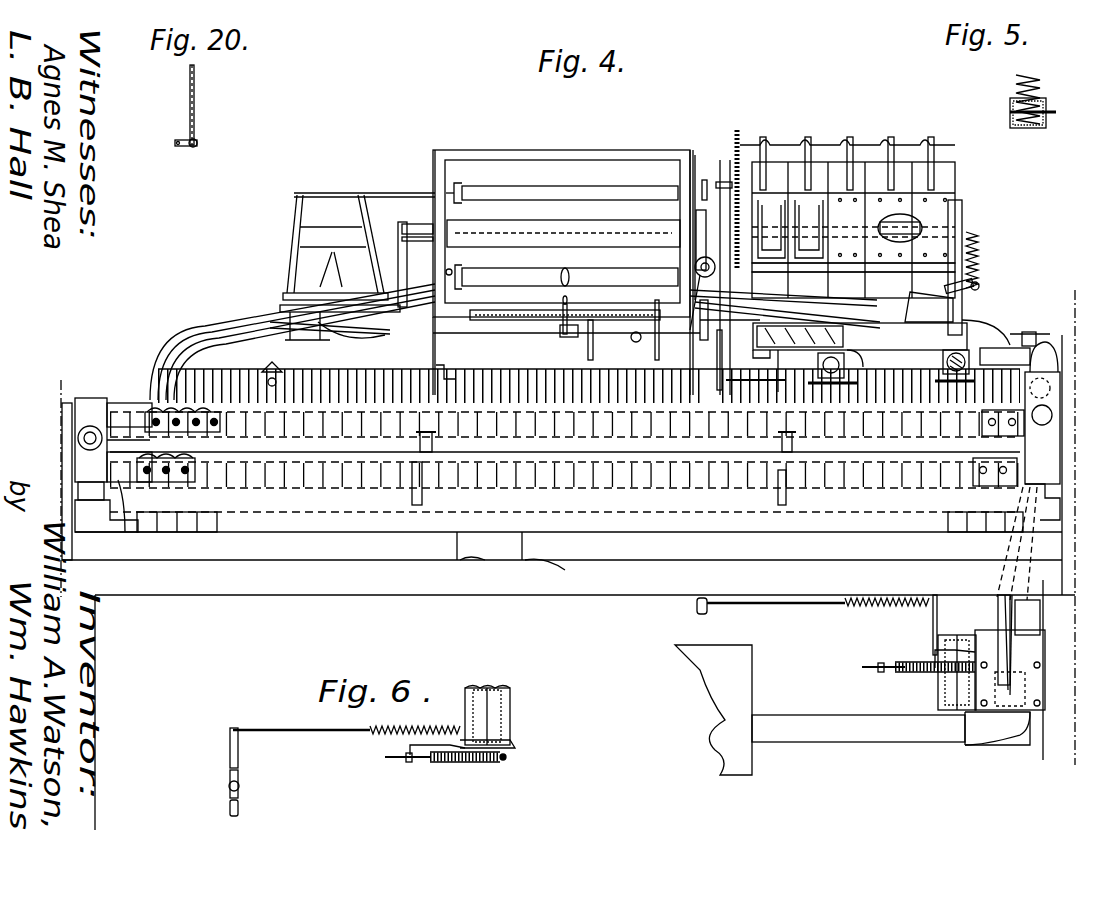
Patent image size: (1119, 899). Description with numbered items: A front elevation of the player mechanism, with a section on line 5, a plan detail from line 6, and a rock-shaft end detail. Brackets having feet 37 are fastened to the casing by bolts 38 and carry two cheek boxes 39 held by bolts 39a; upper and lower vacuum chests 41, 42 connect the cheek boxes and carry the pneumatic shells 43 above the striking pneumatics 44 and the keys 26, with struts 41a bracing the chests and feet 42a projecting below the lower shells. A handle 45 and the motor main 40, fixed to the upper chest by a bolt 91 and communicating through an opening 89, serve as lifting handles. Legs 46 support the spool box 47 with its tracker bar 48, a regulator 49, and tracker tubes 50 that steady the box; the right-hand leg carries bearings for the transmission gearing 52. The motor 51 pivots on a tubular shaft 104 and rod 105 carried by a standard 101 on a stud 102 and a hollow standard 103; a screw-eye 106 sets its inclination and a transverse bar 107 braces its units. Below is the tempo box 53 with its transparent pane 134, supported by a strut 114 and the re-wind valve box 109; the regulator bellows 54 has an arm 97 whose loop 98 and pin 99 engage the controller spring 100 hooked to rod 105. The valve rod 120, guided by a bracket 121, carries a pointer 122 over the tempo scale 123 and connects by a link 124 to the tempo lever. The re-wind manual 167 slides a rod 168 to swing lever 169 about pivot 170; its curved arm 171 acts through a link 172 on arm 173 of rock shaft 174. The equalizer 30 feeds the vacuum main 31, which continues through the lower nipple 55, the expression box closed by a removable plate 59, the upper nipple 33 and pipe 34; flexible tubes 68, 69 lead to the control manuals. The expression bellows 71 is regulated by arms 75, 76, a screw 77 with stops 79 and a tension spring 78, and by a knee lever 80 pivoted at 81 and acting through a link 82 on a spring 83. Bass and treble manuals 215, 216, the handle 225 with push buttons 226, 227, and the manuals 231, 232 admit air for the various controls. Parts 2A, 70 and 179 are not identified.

In FIG. 4, the base frame 2A is at (320, 560).
In FIG. 4, the section line 5— 5 is at (967, 292).
In FIG. 4, the line 6— 6 is at (660, 598).
In FIG. 4, the keys 26 is at (205, 534).
In FIG. 4, the equalizer 30 is at (713, 710).
In FIG. 4, the wind way or vacuum main 31 is at (800, 715).
In FIG. 4, the upper nipple 33 is at (1040, 622).
In FIG. 4, the pipe 34 is at (1020, 612).
In FIG. 4, the foot 37 is at (1085, 500).
In FIG. 4, the screws or bolts 38 is at (1085, 530).
In FIG. 4, the cheek boxes 39 is at (75, 460).
In FIG. 4, the bolts 39a is at (78, 437).
In FIG. 4, the motor main 40 is at (1005, 348).
In FIG. 4, the upper pneumatic vacuum chest 41 is at (120, 403).
In FIG. 4, the struts 41a is at (432, 440).
In FIG. 4, the lower pneumatic vacuum chest 42 is at (160, 480).
In FIG. 4, the feet 42a is at (422, 500).
In FIG. 4, the striking or power pneumatic seamless shells 43 is at (180, 412).
In FIG. 4, the striking pneumatics 44 is at (160, 440).
In FIG. 4, the handle 45 is at (275, 350).
In FIG. 4, the legs 46 is at (440, 356).
In FIG. 4, the tracker box or spool box 47 is at (585, 150).
In FIG. 4, the tracker bar 48 is at (550, 232).
In FIG. 4, the regulator 49 is at (360, 195).
In FIG. 4, the tracker tubes 50 is at (230, 330).
In FIG. 4, the motor 51 is at (945, 170).
In FIG. 4, the transmission gearing 52 is at (735, 170).
In FIG. 4, the tempo throttle box 53 is at (760, 360).
In FIG. 4, the automatic motor regulator bellows 54 is at (929, 307).
In FIG. 4, the lower nipple 55 is at (985, 742).
In FIG. 4, the cover or removable plate 59 is at (1025, 740).
In FIG. 4, the flexible tube 68 is at (1040, 640).
In FIG. 4, the flexible tube 69 is at (1045, 355).
In FIG. 4, the housing 70 is at (1006, 652).
In FIG. 4, the expression bellows 71 is at (955, 615).
In FIG. 6, the expression bellows 71 is at (495, 697).
In FIG. 4, the arm 75 is at (932, 620).
In FIG. 6, the arm 75 is at (505, 750).
In FIG. 4, the arm 76 is at (935, 675).
In FIG. 6, the arm 76 is at (450, 762).
In FIG. 4, the screw 77 is at (875, 662).
In FIG. 6, the screw 77 is at (390, 760).
In FIG. 4, the tension spring 78 is at (910, 660).
In FIG. 6, the tension spring 78 is at (490, 765).
In FIG. 4, the adjustable stops 79 is at (882, 672).
In FIG. 6, the adjustable stops 79 is at (409, 762).
In FIG. 4, the lever 80 is at (692, 617).
In FIG. 6, the lever 80 is at (240, 807).
In FIG. 6, the pivot 81 is at (240, 787).
In FIG. 4, the link 82 is at (750, 605).
In FIG. 6, the link 82 is at (280, 726).
In FIG. 4, the spring 83 is at (880, 606).
In FIG. 6, the spring 83 is at (380, 738).
In FIG. 4, the opening 89 is at (1060, 360).
In FIG. 4, the bolt 91 is at (1040, 334).
In FIG. 4, the arm 97 is at (928, 286).
In FIG. 5, the loop 98 is at (1046, 103).
In FIG. 4, the loop 98 is at (978, 284).
In FIG. 5, the pin 99 is at (1046, 118).
In FIG. 5, the spring 100 is at (1030, 78).
In FIG. 4, the spring 100 is at (975, 235).
In FIG. 4, the standard 101 is at (738, 316).
In FIG. 4, the stud 102 is at (719, 320).
In FIG. 4, the hollow standard 103 is at (962, 260).
In FIG. 4, the tubular shaft 104 is at (905, 215).
In FIG. 4, the rod or bolt 105 is at (920, 225).
In FIG. 4, the screw-eye 106 is at (775, 286).
In FIG. 4, the transverse bar 107 is at (852, 286).
In FIG. 4, the box 109 is at (985, 335).
In FIG. 4, the strut 114 is at (815, 363).
In FIG. 4, the valve rod 120 is at (675, 330).
In FIG. 4, the guide bracket 121 is at (594, 341).
In FIG. 4, the pointer 122 is at (630, 345).
In FIG. 4, the tempo scale 123 is at (618, 300).
In FIG. 4, the link 124 is at (1048, 326).
In FIG. 4, the transparent pane 134 is at (860, 345).
In FIG. 4, the re-wind manual 167 is at (560, 300).
In FIG. 4, the rod 168 is at (642, 349).
In FIG. 4, the lever 169 is at (690, 230).
In FIG. 4, the pivot 170 is at (694, 270).
In FIG. 4, the curved arm 171 is at (695, 262).
In FIG. 20, the link 172 is at (195, 100).
In FIG. 4, the link 172 is at (755, 356).
In FIG. 20, the arm 173 is at (190, 146).
In FIG. 20, the rock shaft 174 is at (178, 146).
In FIG. 4, the rock shaft 174 is at (755, 400).
In FIG. 4, the rod 179 is at (711, 360).
In FIG. 4, the bass manual 215 is at (562, 573).
In FIG. 4, the treble manual 216 is at (521, 533).
In FIG. 4, the handle 225 is at (680, 560).
In FIG. 4, the push button 226 is at (680, 560).
In FIG. 4, the push button 227 is at (675, 560).
In FIG. 4, the manual 231 is at (456, 533).
In FIG. 4, the silent traveler manual 232 is at (470, 560).